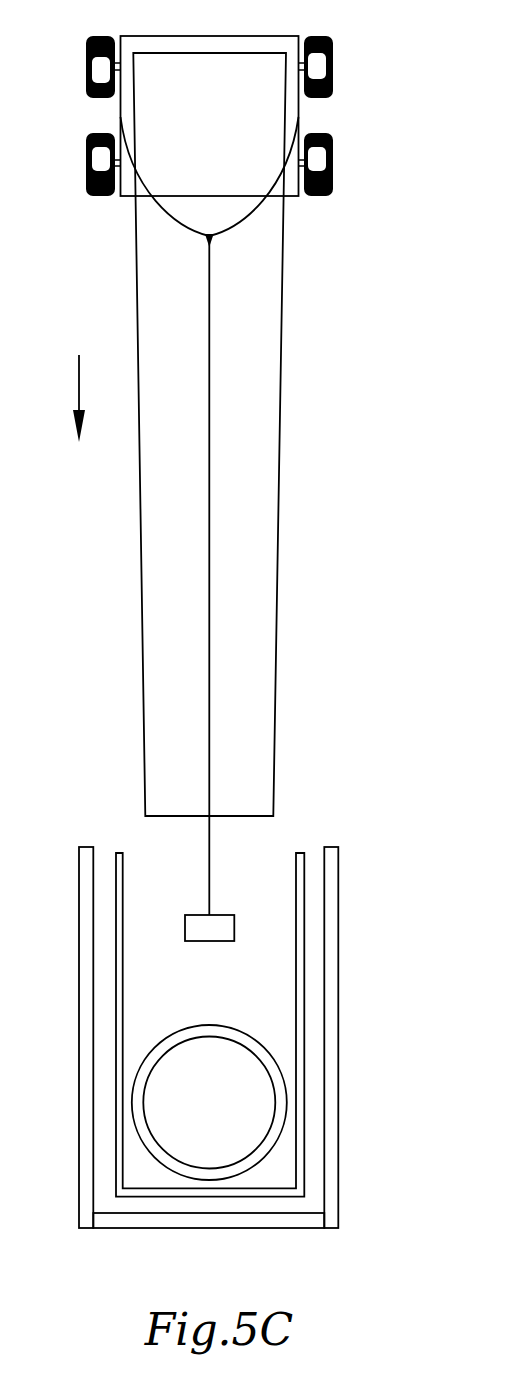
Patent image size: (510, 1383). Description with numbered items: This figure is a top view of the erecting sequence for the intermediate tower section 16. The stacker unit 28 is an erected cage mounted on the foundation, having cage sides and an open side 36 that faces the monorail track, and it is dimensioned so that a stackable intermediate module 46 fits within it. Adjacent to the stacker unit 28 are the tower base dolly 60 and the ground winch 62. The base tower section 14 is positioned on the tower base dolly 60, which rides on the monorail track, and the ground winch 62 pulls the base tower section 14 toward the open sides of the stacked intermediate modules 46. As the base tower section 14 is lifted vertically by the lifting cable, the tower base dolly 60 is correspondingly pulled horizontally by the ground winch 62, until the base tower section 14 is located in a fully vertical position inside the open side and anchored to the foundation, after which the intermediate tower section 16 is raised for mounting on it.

The tower base dolly 60 is at (283, 41).
The intermediate tower section 16 is at (278, 338).
The ground winch 62 is at (222, 920).
The stacker unit 28 is at (333, 942).
The stackable intermediate module 46 is at (300, 855).
The open side 36 is at (122, 824).
The base tower section 14 is at (210, 1030).